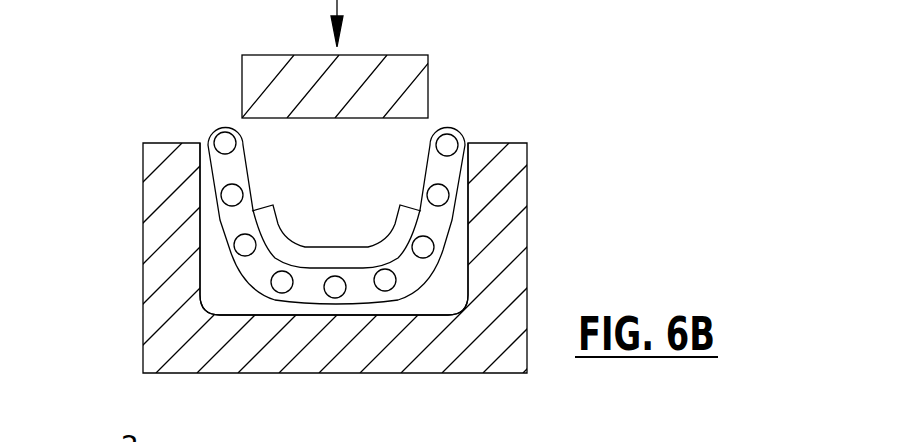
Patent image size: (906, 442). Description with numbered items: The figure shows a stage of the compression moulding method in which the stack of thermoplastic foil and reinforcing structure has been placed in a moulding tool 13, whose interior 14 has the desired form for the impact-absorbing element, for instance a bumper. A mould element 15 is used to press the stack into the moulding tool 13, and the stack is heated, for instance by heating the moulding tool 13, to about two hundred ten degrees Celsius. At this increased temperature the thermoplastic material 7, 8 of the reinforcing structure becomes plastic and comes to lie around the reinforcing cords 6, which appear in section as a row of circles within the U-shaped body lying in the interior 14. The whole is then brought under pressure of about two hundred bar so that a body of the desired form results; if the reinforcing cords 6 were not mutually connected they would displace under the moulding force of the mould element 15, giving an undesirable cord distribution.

The reinforcing cords 6 is at (337, 284).
The thermoplastic material 7 is at (302, 292).
The thermoplastic material 8 is at (268, 405).
The moulding tool 13 is at (515, 243).
The interior 14 is at (193, 279).
The mould element 15 is at (426, 92).